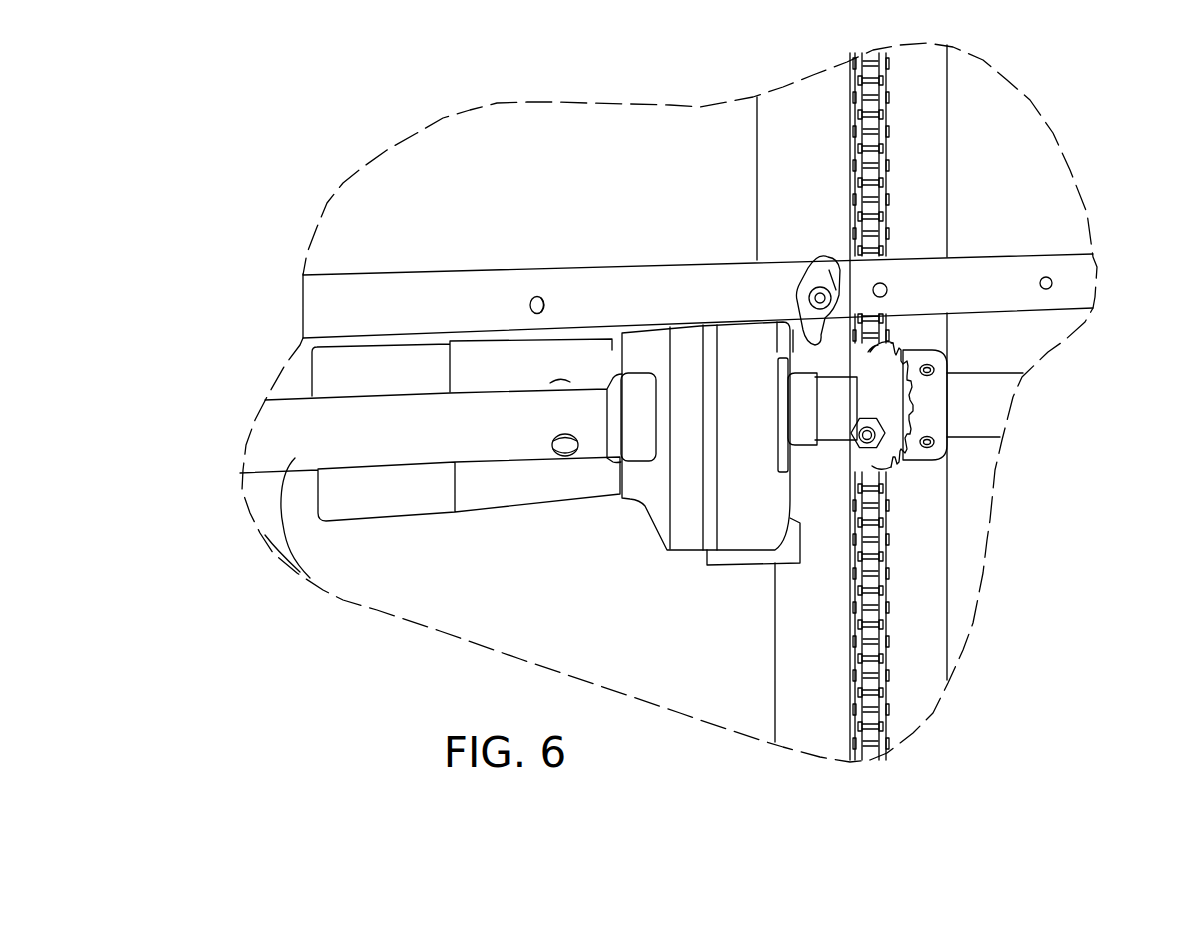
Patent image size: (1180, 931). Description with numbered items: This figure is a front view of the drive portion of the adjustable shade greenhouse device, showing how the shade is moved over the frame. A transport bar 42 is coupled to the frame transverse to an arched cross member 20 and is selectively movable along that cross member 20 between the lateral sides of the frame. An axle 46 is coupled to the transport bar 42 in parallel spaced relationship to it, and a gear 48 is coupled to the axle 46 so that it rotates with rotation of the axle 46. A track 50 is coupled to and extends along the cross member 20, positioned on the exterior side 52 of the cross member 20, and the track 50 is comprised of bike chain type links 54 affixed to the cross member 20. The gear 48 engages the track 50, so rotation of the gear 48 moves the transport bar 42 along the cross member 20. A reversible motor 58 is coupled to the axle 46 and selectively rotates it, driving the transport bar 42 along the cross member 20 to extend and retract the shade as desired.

The cross member 20 is at (949, 562).
The transport bar 42 is at (1035, 263).
The axle 46 is at (968, 428).
The gear 48 is at (930, 342).
The track 50 is at (847, 657).
The exterior side 52 is at (918, 648).
The bike chain type links 54 is at (887, 118).
The motor 58 is at (497, 492).